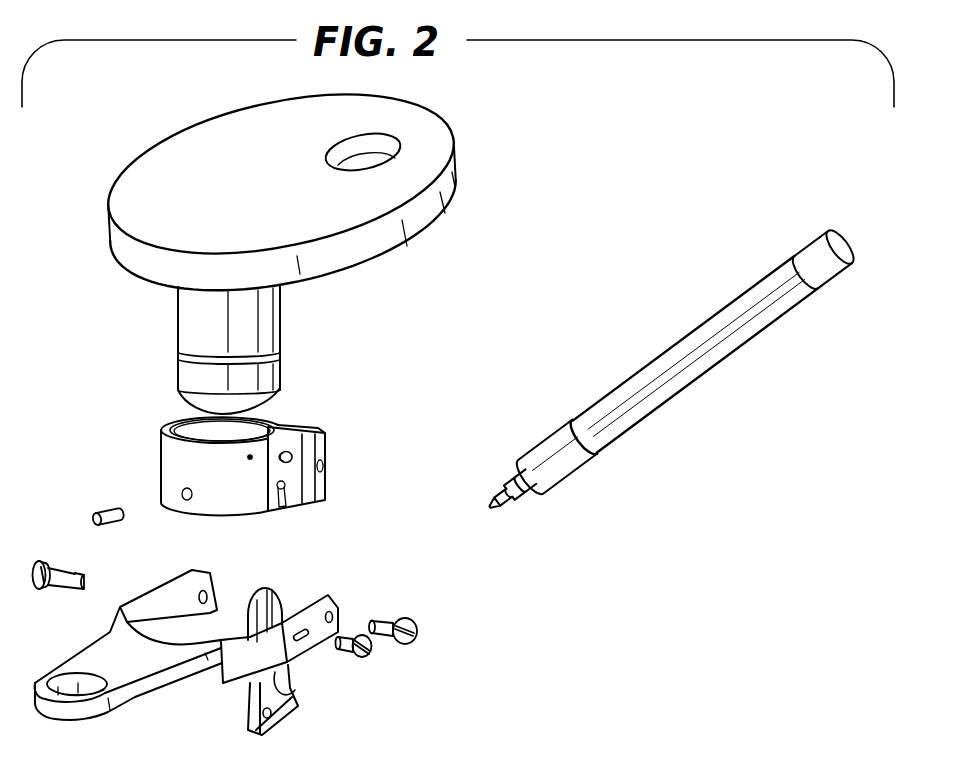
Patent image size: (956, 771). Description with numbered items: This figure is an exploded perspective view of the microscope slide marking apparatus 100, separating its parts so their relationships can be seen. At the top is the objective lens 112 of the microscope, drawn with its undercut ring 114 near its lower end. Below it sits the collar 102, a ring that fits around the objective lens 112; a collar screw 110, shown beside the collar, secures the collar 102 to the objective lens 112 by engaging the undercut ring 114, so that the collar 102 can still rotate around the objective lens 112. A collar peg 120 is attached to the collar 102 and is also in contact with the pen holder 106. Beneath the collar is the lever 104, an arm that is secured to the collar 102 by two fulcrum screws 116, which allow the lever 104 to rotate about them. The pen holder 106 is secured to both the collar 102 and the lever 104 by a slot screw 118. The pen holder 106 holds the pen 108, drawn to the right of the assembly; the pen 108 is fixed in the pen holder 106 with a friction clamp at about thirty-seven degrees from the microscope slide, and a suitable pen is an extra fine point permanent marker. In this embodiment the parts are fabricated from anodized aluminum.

The microscope slide marking apparatus 100 is at (432, 413).
The collar 102 is at (174, 424).
The lever 104 is at (77, 655).
The pen holder 106 is at (310, 690).
The pen 108 is at (672, 400).
The collar screw 110 is at (104, 506).
The objective lens 112 is at (282, 312).
The undercut ring 114 is at (280, 357).
The fulcrum screws 116 is at (42, 558).
The slot screw 118 is at (362, 632).
The collar peg 120 is at (289, 450).